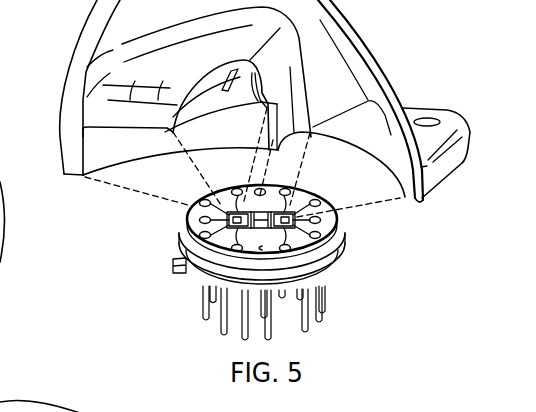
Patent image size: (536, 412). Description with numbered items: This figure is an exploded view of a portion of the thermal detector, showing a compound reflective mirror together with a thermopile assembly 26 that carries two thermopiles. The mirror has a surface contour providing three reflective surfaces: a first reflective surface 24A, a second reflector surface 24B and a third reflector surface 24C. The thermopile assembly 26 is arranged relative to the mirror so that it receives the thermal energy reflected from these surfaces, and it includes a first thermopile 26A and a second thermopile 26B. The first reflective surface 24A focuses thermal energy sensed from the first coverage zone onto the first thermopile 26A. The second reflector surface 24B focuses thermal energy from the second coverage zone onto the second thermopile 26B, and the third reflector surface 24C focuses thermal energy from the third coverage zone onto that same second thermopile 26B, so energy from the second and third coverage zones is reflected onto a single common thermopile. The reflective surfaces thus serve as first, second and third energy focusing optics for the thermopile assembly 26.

The first reflective surface 24A is at (388, 120).
The second reflector surface 24B is at (202, 100).
The third reflector surface 24C is at (125, 150).
The thermopile assembly 26 is at (358, 237).
The first thermopile 26A is at (340, 238).
The second thermopile 26B is at (187, 228).